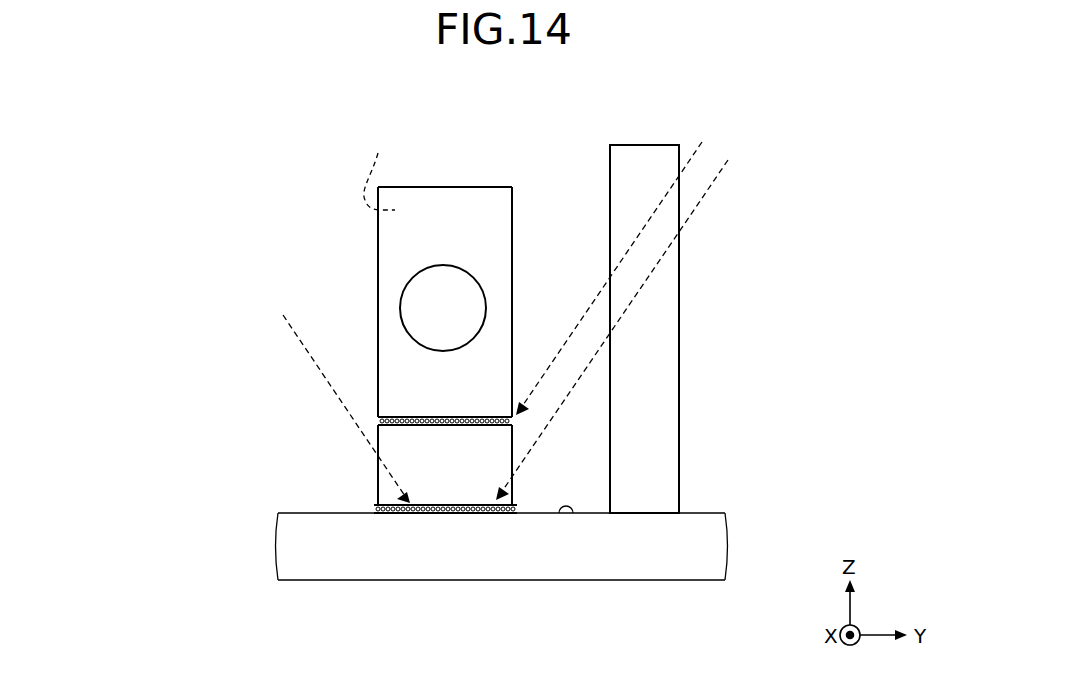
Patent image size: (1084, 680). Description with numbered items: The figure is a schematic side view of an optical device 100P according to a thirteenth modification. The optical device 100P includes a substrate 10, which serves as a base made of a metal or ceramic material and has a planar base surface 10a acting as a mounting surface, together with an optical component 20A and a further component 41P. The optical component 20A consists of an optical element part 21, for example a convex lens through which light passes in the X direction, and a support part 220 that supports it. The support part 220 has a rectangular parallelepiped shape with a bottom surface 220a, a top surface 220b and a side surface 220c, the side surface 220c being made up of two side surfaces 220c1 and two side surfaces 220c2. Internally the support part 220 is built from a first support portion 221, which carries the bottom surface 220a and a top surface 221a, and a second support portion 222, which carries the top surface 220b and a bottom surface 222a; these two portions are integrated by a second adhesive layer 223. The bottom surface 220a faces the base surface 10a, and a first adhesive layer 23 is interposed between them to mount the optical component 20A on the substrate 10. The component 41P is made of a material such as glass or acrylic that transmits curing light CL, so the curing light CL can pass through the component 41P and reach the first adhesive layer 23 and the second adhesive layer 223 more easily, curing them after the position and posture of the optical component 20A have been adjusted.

The optical device 100P is at (142, 158).
The substrate 10 is at (736, 548).
The base surface 10a is at (566, 513).
The first adhesive layer 23 is at (394, 513).
The optical component 20A is at (168, 378).
The optical element part 21 is at (400, 255).
The support part 220 is at (234, 407).
The first support portion 221 is at (374, 522).
The second support portion 222 is at (398, 367).
The second adhesive layer 223 is at (398, 418).
The top surface 221a is at (478, 417).
The bottom surface 222a is at (490, 425).
The bottom surface 220a is at (464, 513).
The top surface 220b is at (470, 187).
The side surface 220c is at (449, 243).
The side surface 220c1 is at (377, 158).
The side surface 220c2 is at (512, 205).
The component 41P is at (656, 139).
The curing light CL is at (285, 323).